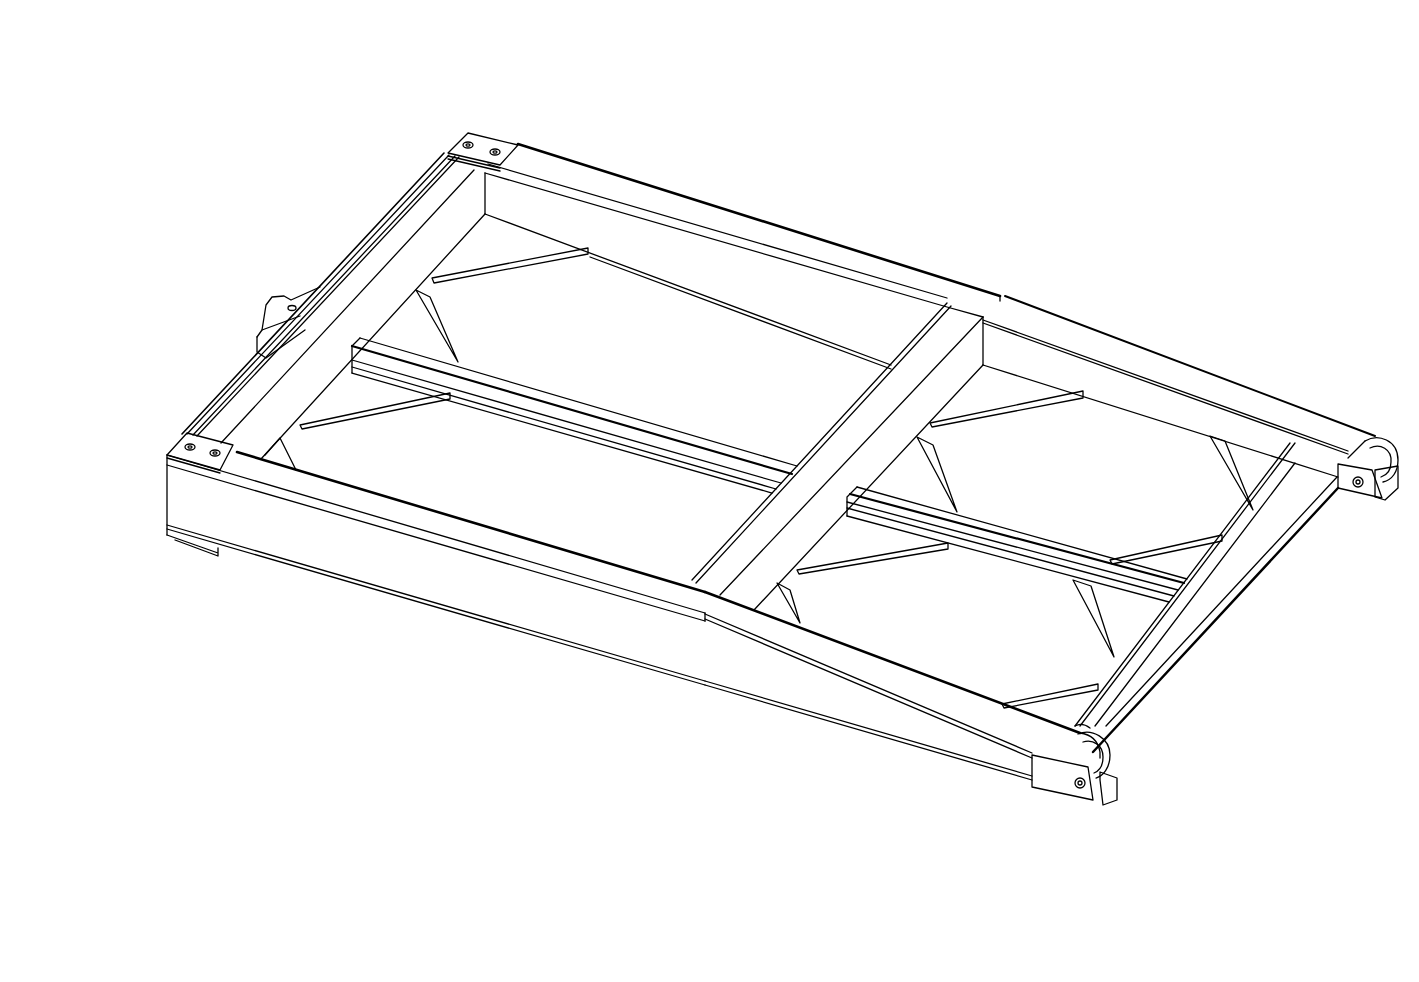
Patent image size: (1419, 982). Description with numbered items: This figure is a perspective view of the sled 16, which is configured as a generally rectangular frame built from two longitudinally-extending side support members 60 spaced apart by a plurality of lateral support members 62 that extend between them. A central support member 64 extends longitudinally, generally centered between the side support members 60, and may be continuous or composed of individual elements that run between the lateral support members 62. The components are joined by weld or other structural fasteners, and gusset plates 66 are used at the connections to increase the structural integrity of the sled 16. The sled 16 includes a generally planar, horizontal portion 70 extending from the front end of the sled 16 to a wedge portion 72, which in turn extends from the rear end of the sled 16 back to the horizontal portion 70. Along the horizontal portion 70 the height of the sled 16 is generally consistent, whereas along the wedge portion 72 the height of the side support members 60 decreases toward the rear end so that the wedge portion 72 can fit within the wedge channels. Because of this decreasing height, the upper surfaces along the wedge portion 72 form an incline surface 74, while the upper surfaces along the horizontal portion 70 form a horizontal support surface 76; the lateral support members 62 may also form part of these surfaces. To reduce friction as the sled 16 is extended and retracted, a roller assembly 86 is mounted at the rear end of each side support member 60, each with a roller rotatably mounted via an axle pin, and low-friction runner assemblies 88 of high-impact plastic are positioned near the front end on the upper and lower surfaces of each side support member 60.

The sled 16 is at (1090, 240).
The side support member 60 is at (965, 283).
The lateral support member 62 is at (373, 238).
The central support member 64 is at (598, 417).
The gusset plate 66 is at (523, 250).
The horizontal portion 70 is at (459, 589).
The wedge portion 72 is at (955, 735).
The incline surface 74 is at (1212, 307).
The horizontal support surface 76 is at (787, 195).
The roller assembly 86 is at (1380, 457).
The runner assembly 88 is at (483, 146).